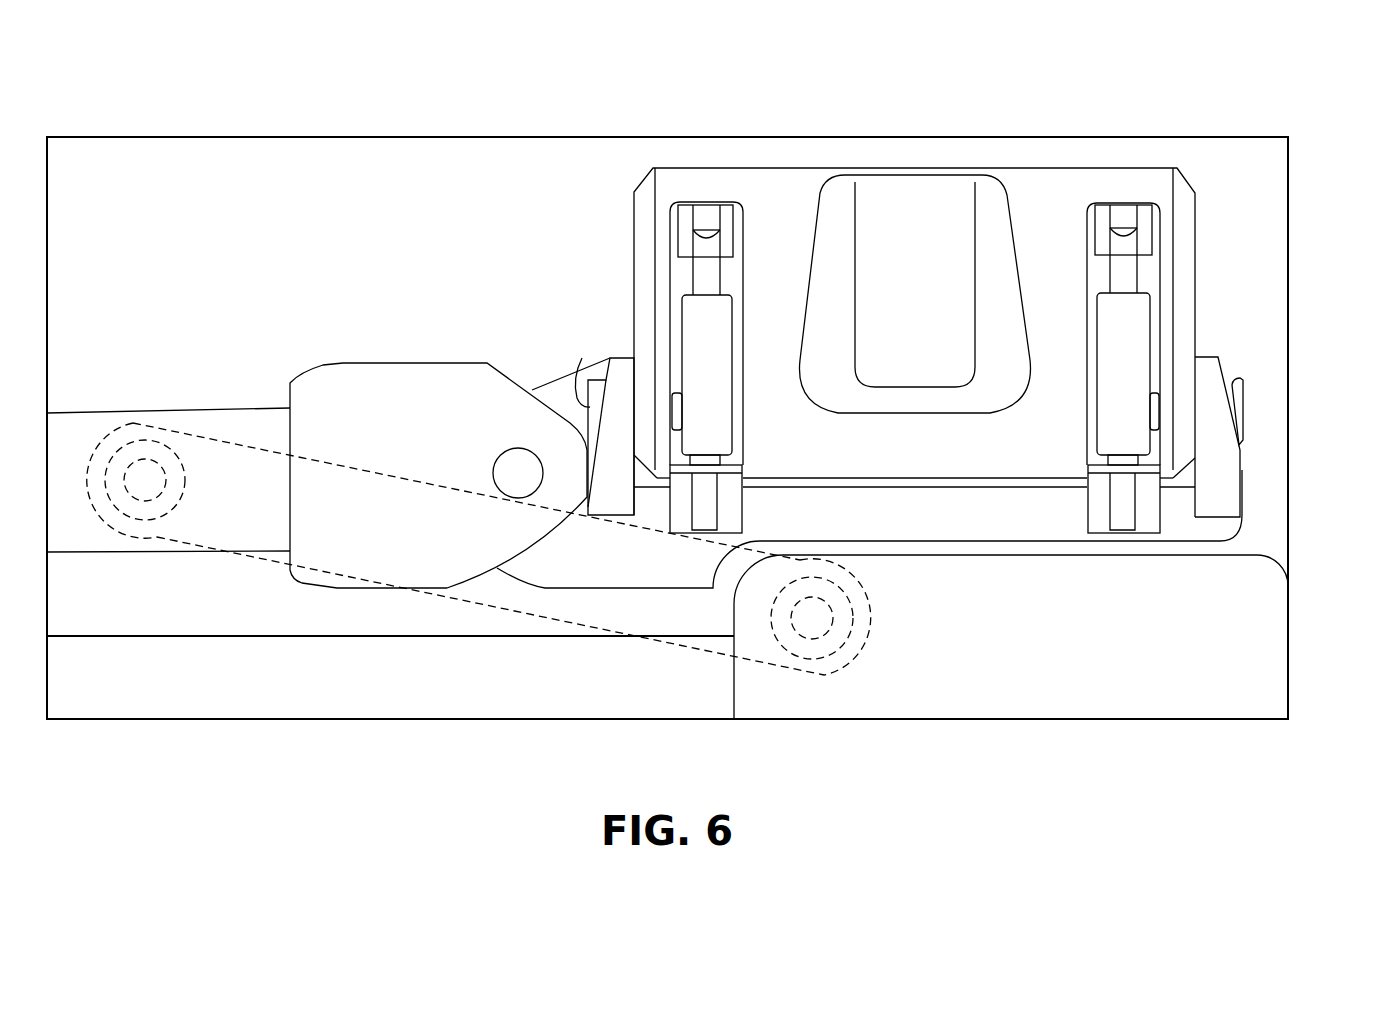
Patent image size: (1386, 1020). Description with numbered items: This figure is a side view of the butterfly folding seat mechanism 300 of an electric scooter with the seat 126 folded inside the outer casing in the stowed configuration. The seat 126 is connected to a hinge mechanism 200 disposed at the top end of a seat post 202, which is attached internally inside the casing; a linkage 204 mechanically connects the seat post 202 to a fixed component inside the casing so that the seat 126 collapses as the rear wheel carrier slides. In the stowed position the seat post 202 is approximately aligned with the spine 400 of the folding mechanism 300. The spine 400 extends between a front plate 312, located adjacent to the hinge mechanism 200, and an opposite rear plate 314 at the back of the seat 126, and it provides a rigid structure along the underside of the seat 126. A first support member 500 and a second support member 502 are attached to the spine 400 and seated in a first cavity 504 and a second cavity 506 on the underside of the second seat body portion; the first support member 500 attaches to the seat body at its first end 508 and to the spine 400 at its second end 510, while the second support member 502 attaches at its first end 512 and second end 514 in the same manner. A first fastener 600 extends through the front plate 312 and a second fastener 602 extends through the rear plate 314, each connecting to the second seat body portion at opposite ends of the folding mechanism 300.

The seat 126 is at (1245, 210).
The hinge mechanism 200 is at (418, 393).
The seat post 202 is at (223, 409).
The linkage 204 is at (250, 563).
The folding mechanism 300 is at (1248, 530).
The front plate 312 is at (620, 357).
The rear plate 314 is at (1205, 357).
The spine 400 is at (932, 520).
The first support member 500 is at (713, 433).
The second support member 502 is at (1118, 433).
The first cavity 504 is at (743, 407).
The second cavity 506 is at (1087, 407).
The first end 508 is at (705, 215).
The second end 510 is at (733, 505).
The first end 512 is at (1124, 215).
The second end 514 is at (1093, 505).
The first fastener 600 is at (582, 358).
The second fastener 602 is at (1243, 407).